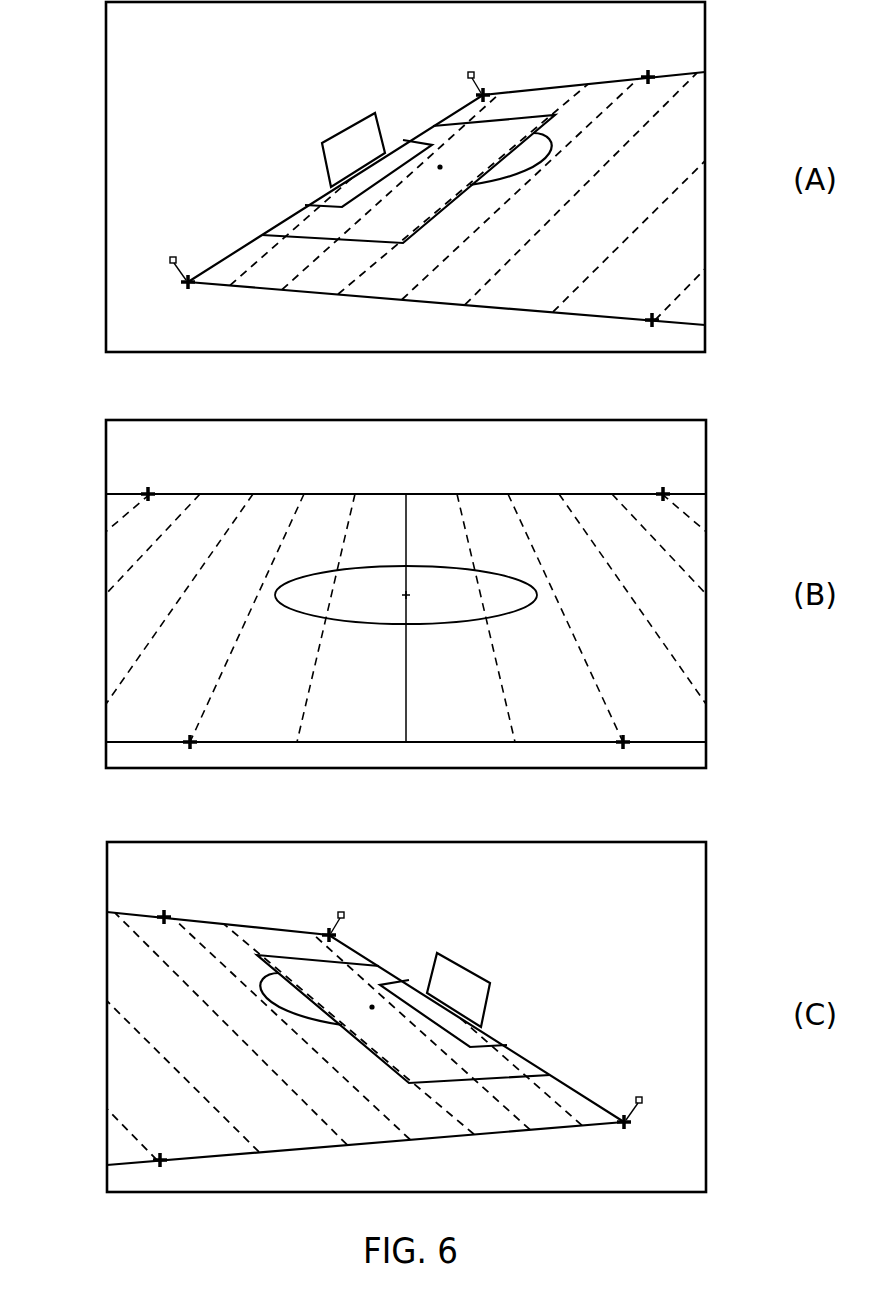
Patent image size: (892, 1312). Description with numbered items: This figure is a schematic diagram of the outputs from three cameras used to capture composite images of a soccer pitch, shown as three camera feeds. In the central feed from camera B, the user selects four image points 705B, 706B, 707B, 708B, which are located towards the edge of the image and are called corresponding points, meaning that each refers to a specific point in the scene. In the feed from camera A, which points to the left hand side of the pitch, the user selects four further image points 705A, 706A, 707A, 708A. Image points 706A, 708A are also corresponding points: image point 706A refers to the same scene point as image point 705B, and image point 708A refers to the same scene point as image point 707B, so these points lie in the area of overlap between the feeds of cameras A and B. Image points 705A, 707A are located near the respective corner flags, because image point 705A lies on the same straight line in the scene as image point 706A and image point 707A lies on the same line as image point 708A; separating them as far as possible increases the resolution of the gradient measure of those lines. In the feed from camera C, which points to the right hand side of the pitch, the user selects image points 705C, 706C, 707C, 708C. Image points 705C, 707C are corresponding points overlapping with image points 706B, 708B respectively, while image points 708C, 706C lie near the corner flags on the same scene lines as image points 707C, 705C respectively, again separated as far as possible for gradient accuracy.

The image point 705A is at (187, 283).
The image point 706A is at (651, 321).
The image point 707A is at (486, 93).
The image point 708A is at (647, 76).
The image point 705B is at (189, 741).
The image point 706B is at (623, 741).
The image point 707B is at (190, 468).
The image point 708B is at (662, 494).
The image point 705C is at (161, 1163).
The image point 706C is at (624, 1124).
The image point 707C is at (188, 898).
The image point 708C is at (327, 935).